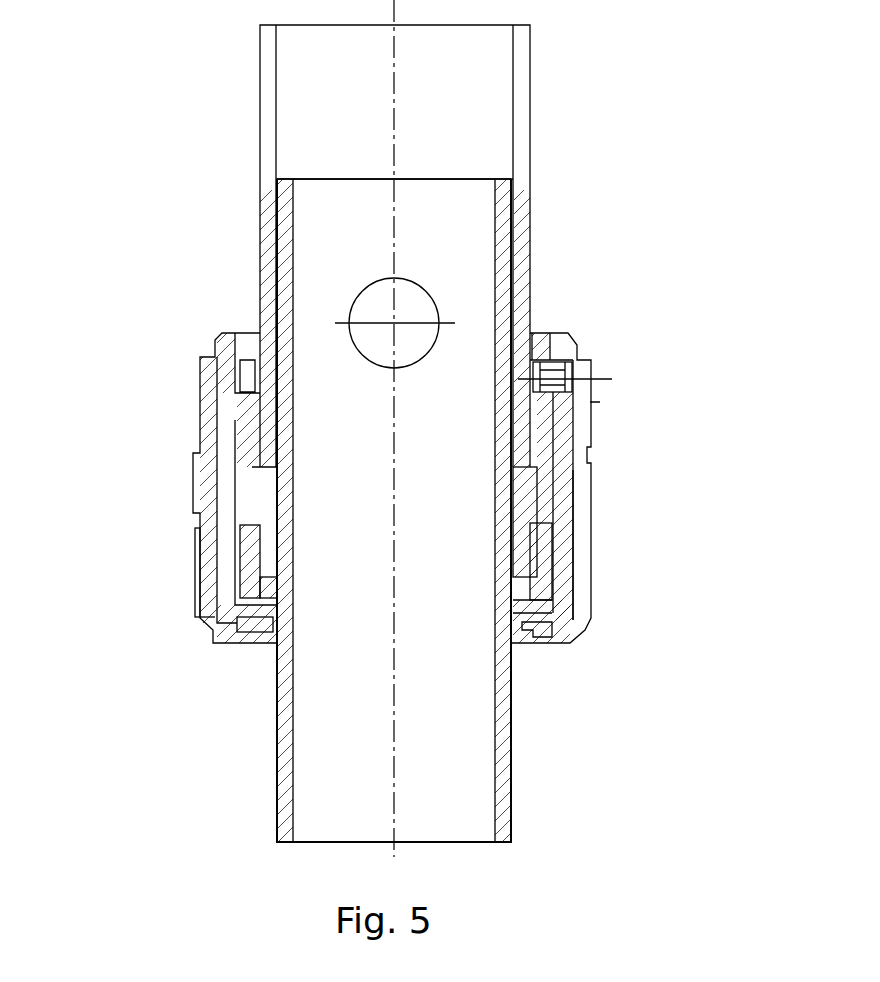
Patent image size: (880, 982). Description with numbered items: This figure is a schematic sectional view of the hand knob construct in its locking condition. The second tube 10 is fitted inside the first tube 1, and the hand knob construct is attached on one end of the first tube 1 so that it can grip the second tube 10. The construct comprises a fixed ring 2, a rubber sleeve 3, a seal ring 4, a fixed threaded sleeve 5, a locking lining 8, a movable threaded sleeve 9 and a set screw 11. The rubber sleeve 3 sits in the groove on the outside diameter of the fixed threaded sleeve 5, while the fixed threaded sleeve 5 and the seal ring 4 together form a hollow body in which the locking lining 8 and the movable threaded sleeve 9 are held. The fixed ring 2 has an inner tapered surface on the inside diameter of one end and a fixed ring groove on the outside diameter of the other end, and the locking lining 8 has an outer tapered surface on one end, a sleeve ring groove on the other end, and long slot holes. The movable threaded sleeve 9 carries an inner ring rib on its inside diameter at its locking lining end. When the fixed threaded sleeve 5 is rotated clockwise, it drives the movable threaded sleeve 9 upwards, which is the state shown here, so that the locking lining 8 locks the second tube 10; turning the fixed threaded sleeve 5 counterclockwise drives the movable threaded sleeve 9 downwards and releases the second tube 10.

The first tube 1 is at (268, 94).
The fixed ring 2 is at (573, 407).
The rubber sleeve 3 is at (195, 480).
The seal ring 4 is at (532, 643).
The fixed threaded sleeve 5 is at (570, 578).
The locking lining 8 is at (552, 504).
The movable threaded sleeve 9 is at (198, 595).
The second tube 10 is at (290, 758).
The set screw 11 is at (575, 347).